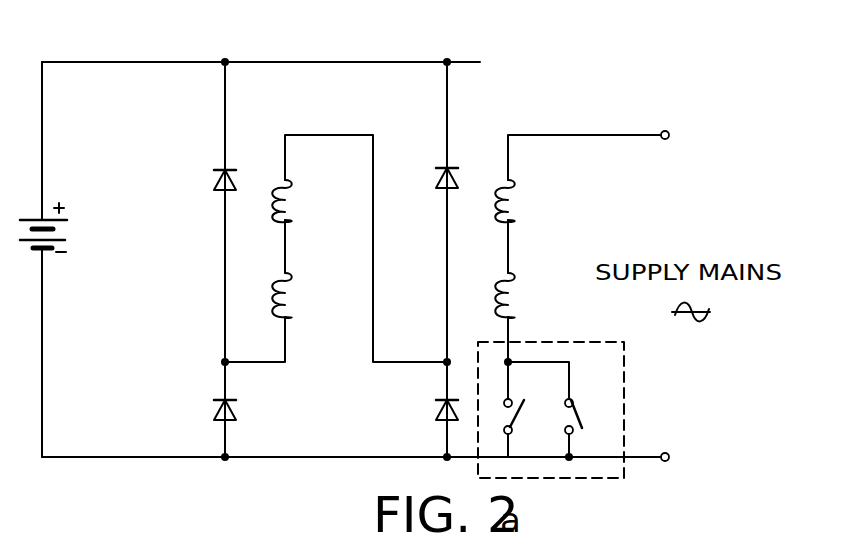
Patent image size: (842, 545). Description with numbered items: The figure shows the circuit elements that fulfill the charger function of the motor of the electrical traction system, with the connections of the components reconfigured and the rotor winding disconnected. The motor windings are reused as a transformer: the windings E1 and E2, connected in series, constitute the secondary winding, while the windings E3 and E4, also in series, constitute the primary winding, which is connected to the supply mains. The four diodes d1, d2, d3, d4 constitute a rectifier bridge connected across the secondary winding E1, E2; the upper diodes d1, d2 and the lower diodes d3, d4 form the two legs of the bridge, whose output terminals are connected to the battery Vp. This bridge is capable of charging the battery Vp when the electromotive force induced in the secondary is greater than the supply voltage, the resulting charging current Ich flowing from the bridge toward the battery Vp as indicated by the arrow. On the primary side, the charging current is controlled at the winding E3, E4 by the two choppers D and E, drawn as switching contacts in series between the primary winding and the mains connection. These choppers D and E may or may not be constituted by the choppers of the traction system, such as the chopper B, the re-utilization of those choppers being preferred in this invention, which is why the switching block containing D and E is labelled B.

The charging current Ich is at (193, 52).
The battery Vp is at (62, 227).
The diode d1 is at (210, 182).
The diode d2 is at (431, 180).
The diode d3 is at (207, 412).
The diode d4 is at (432, 412).
The winding E1 is at (300, 201).
The winding E2 is at (300, 295).
The winding E3 is at (523, 201).
The winding E4 is at (523, 295).
The chopper B is at (622, 396).
The chopper D is at (523, 416).
The chopper E is at (581, 416).